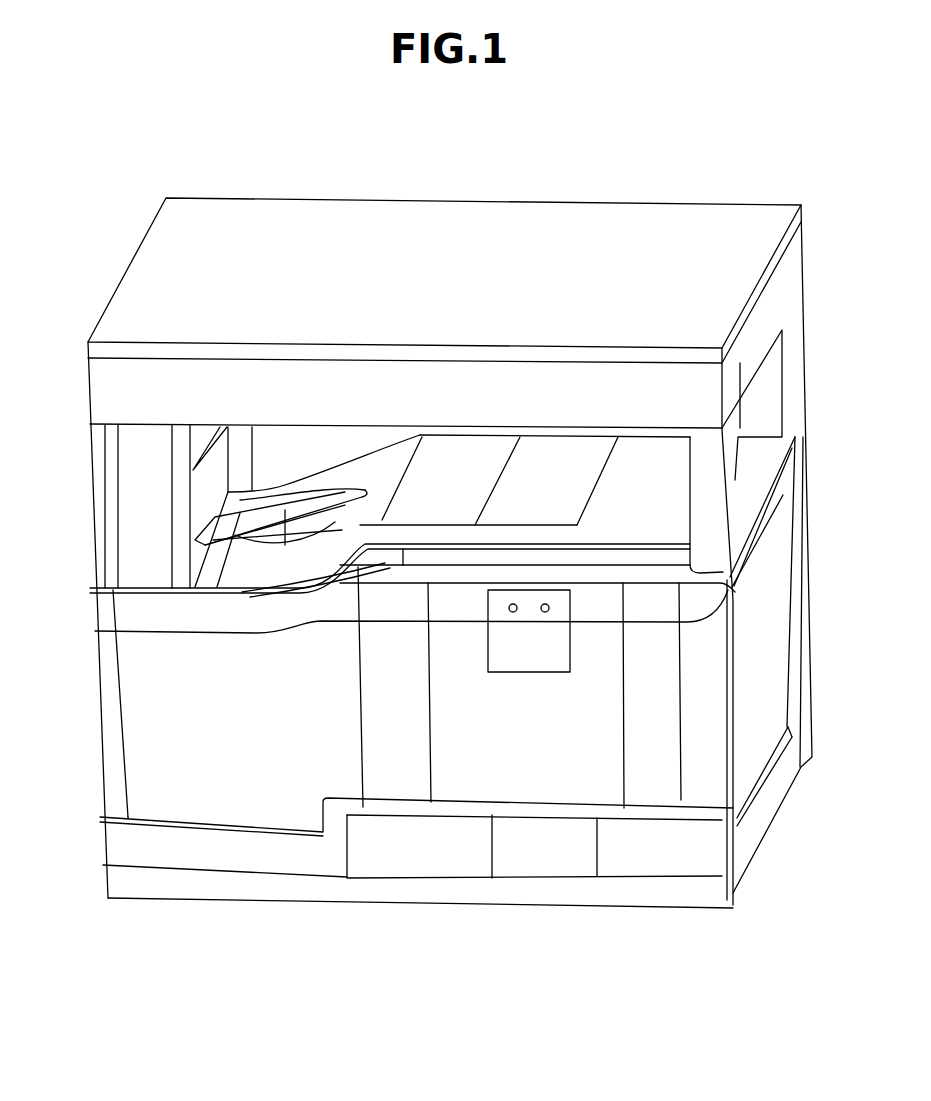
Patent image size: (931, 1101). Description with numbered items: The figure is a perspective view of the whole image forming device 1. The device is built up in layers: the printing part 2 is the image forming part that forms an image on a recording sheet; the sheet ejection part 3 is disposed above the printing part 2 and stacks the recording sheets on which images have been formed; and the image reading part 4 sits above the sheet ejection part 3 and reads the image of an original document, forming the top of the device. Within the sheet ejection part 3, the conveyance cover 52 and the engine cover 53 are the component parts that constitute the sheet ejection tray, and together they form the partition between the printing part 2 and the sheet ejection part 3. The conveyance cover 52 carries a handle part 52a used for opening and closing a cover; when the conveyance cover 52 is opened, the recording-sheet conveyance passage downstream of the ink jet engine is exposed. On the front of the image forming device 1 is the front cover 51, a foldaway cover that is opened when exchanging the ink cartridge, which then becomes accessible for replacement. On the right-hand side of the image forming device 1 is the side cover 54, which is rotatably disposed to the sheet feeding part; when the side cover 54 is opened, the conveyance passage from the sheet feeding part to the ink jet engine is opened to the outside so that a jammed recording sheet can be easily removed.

The image forming device 1 is at (532, 168).
The printing part 2 is at (95, 721).
The sheet ejection part 3 is at (763, 380).
The image reading part 4 is at (778, 314).
The front cover 51 is at (236, 805).
The conveyance cover 52 is at (292, 488).
The handle part 52a is at (350, 478).
The engine cover 53 is at (518, 484).
The side cover 54 is at (768, 618).